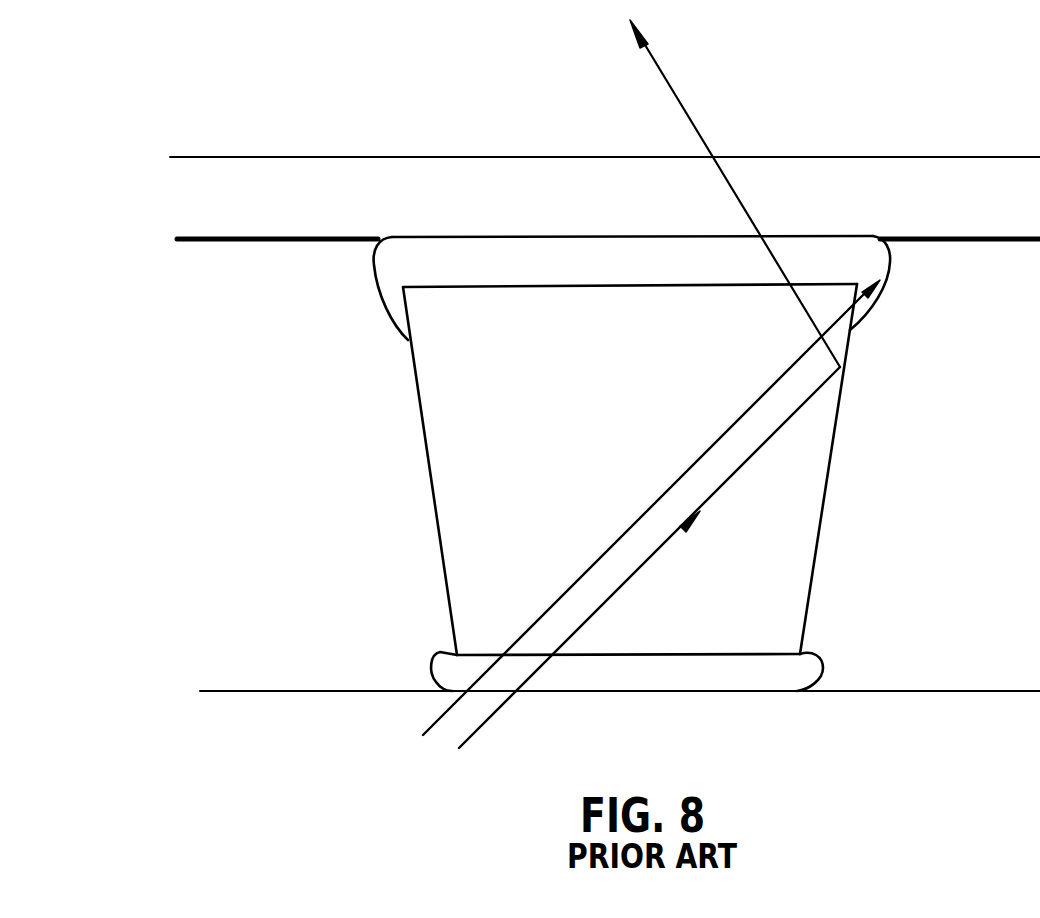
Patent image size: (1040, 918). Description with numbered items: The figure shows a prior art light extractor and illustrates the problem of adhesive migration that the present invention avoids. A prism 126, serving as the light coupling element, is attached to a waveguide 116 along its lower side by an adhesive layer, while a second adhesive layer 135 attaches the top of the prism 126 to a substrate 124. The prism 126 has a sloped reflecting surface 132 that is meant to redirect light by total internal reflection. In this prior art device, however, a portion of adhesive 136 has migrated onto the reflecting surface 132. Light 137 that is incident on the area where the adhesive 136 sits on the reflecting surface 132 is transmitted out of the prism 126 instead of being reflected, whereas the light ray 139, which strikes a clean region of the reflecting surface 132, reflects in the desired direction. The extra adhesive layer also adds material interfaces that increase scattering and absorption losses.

The waveguide 116 is at (960, 754).
The substrate 124 is at (352, 170).
The prism 126 is at (805, 557).
The reflecting surface 132 is at (830, 471).
The second adhesive layer 135 is at (560, 248).
The portion of adhesive 136 is at (871, 325).
The light 137 is at (715, 449).
The light ray 139 is at (675, 90).